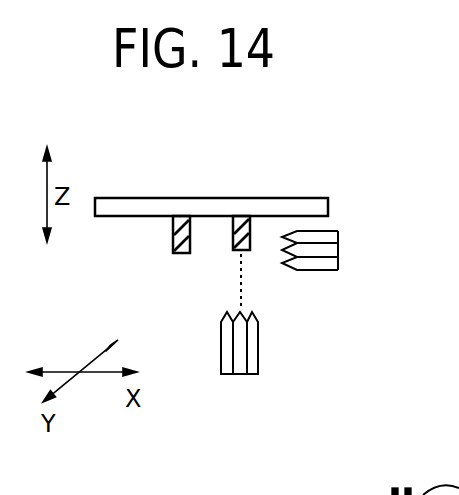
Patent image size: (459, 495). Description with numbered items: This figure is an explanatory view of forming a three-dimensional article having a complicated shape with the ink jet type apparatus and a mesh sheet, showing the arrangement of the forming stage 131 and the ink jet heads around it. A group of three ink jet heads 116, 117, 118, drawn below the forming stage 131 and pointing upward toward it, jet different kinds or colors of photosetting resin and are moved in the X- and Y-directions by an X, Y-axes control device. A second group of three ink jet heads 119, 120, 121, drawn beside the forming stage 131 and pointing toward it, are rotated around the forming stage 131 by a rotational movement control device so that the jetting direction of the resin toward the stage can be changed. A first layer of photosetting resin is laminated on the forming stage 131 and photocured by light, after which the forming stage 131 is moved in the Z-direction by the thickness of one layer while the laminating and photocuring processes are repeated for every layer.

The forming stage 131 is at (203, 198).
The ink jet head 121 is at (340, 231).
The ink jet head 120 is at (341, 252).
The ink jet head 119 is at (338, 270).
The ink jet head 116 is at (221, 362).
The ink jet head 117 is at (240, 358).
The ink jet head 118 is at (258, 355).